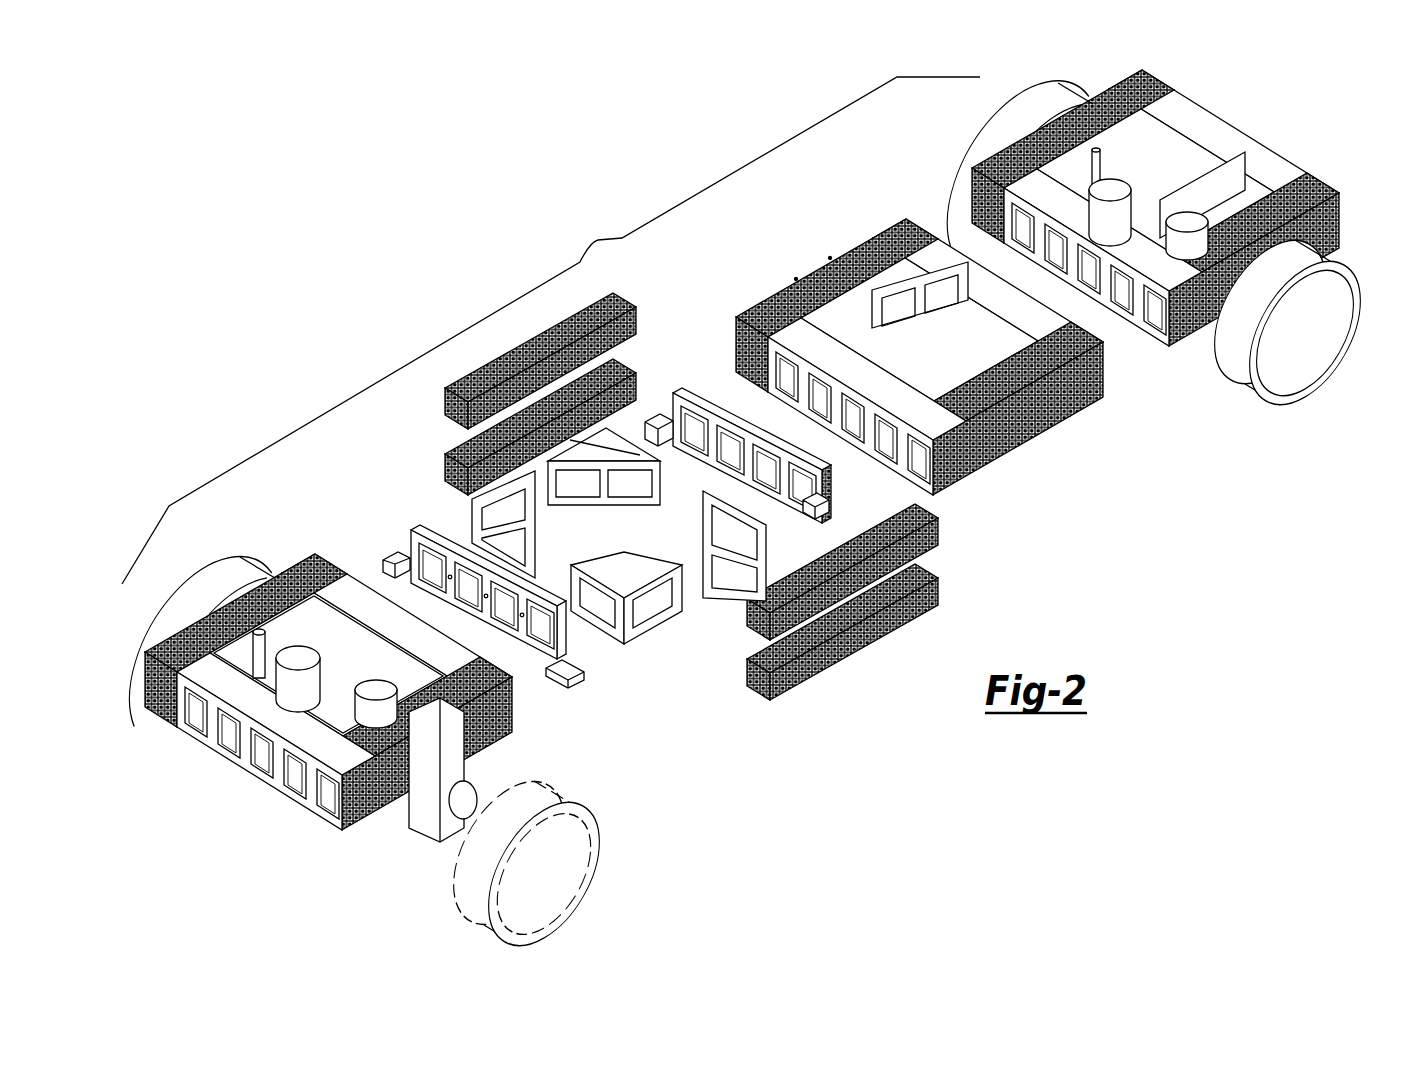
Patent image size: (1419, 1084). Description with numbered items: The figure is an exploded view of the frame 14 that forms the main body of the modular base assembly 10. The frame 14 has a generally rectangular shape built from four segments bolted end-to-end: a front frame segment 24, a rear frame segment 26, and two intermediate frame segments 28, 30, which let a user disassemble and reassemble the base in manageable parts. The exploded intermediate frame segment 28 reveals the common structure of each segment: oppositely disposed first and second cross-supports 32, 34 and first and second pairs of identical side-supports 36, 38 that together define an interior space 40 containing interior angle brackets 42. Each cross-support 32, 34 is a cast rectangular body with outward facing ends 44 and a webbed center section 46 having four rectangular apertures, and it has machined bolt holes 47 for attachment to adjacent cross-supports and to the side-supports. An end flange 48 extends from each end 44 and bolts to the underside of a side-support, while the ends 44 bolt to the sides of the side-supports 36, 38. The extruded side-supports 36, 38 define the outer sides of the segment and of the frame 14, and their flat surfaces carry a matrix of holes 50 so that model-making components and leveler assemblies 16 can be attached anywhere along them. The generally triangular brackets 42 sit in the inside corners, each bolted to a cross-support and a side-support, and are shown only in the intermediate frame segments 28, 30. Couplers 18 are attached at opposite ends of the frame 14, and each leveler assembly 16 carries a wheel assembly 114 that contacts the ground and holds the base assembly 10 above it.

The modular base assembly 10 is at (551, 330).
The frame 14 is at (913, 345).
The leveler assembly 16 is at (302, 696).
The coupler 18 is at (247, 688).
The front frame segment 24 is at (489, 746).
The rear frame segment 26 is at (1199, 337).
The intermediate frame segment 28 is at (800, 688).
The intermediate frame segment 30 is at (1005, 452).
The first cross-support 32 is at (442, 530).
The second cross-support 34 is at (717, 415).
The first pair of side-supports 36 is at (920, 570).
The second pair of side-supports 38 is at (640, 368).
The interior space 40 is at (903, 362).
The interior angle bracket 42 is at (598, 562).
The outward facing end 44 is at (413, 572).
The center section 46 is at (468, 612).
The bolt hole 47 is at (832, 500).
The end flange 48 is at (384, 572).
The holes 50 is at (830, 257).
The wheel assembly 114 is at (977, 145).